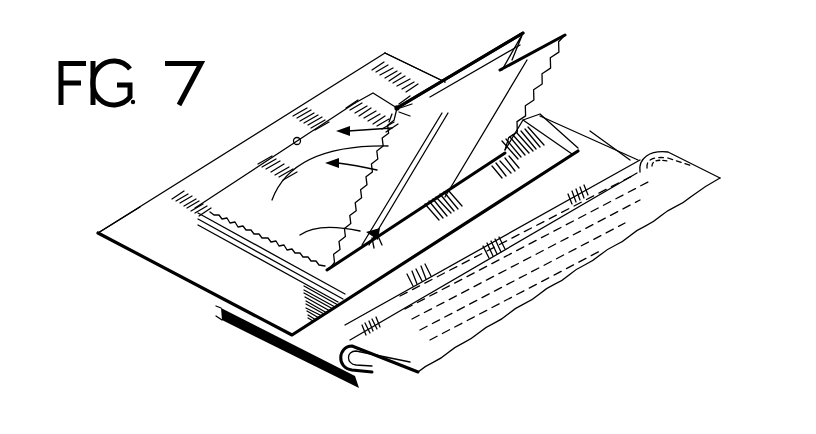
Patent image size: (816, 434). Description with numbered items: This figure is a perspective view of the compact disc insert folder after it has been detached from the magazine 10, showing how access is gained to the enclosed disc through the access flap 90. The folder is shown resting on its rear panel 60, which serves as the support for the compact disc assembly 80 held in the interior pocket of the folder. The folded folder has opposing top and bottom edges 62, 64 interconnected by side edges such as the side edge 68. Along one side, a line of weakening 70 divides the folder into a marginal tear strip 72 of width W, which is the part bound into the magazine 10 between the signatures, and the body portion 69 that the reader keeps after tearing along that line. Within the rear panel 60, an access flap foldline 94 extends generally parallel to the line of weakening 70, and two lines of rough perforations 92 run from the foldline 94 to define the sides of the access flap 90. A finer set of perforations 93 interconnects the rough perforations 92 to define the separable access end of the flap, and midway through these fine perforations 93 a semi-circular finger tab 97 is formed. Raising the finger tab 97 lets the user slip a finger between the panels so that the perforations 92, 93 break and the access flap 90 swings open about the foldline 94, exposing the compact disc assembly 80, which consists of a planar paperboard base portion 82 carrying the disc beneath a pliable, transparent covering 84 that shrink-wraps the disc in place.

The magazine 10 is at (691, 196).
The rear panel 60 is at (390, 48).
The top edge 62 is at (552, 135).
The bottom edge 64 is at (205, 292).
The side edge 68 is at (192, 170).
The body portion 69 is at (138, 215).
The line of weakening 70 is at (609, 174).
The marginal tear strip 72 is at (612, 174).
The compact disc assembly 80 is at (460, 68).
The base portion 82 is at (490, 55).
The covering 84 is at (531, 38).
The access flap 90 is at (457, 161).
The rough perforations 92 is at (400, 110).
The fine perforations 93 is at (354, 108).
The access flap foldline 94 is at (410, 228).
The finger tab 97 is at (292, 128).